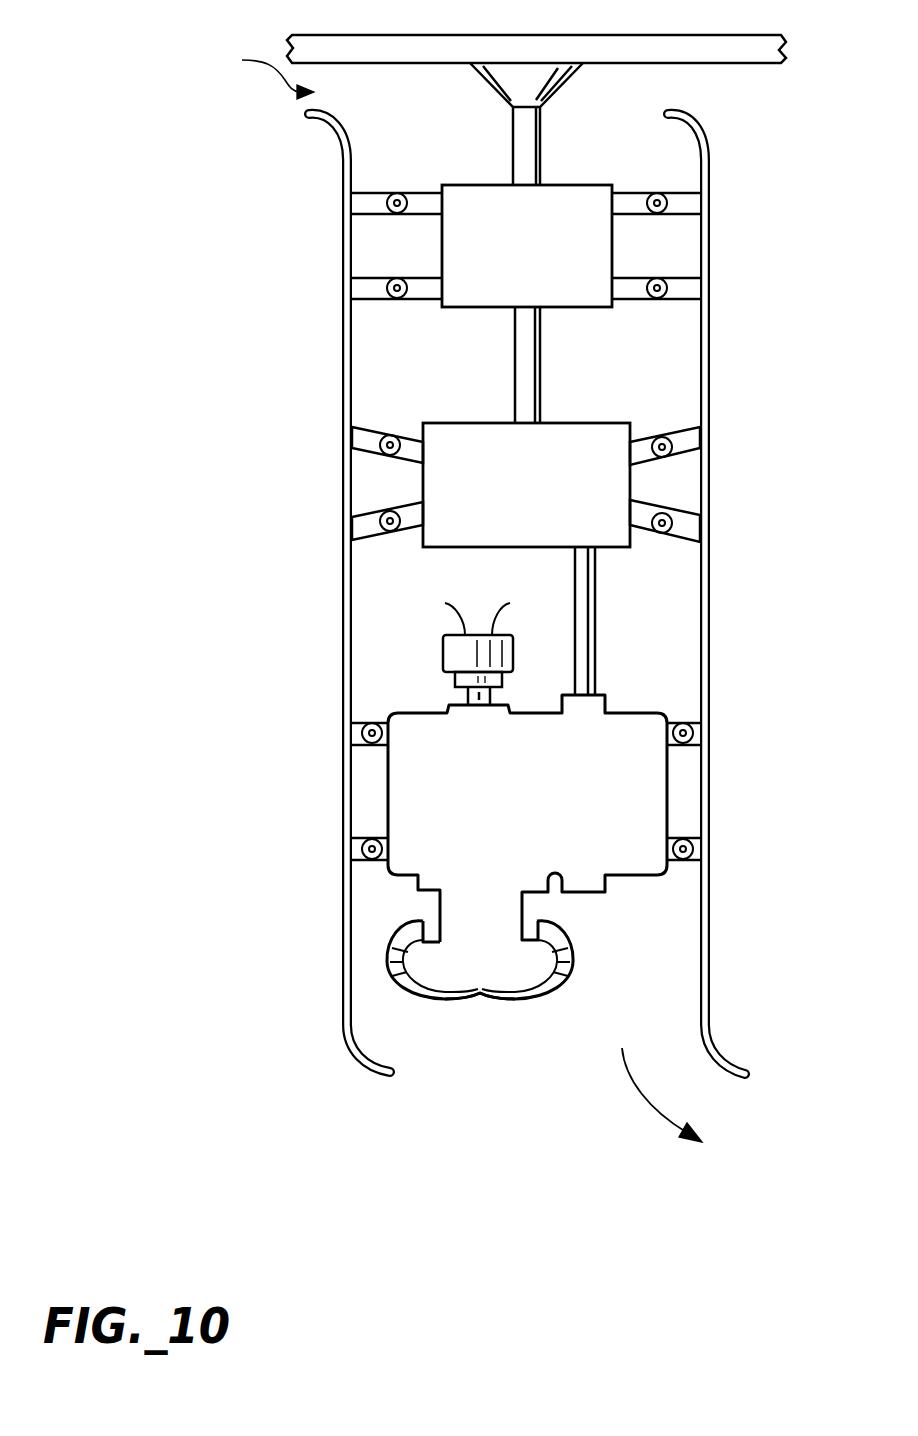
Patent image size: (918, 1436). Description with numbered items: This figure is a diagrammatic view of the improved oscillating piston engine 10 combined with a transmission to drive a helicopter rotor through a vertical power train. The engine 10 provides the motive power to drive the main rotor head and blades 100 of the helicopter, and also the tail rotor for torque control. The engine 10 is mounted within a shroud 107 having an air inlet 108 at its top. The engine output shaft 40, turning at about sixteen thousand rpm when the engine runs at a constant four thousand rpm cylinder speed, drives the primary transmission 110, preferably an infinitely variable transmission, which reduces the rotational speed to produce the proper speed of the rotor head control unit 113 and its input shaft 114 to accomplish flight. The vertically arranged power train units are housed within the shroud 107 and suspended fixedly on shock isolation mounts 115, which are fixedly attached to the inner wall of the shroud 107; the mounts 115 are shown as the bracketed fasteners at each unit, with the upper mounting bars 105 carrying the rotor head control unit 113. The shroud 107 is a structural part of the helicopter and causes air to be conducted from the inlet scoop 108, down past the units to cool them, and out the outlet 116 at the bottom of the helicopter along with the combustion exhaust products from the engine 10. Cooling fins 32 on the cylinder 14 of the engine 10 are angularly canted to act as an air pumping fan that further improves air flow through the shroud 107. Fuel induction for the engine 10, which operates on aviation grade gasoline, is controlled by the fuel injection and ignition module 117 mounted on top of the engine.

The main rotor head and blades 100 is at (702, 43).
The air inlet 108 is at (251, 72).
The shroud 107 is at (346, 415).
The mounting bars 105 is at (450, 243).
The rotor head control unit 113 is at (497, 197).
The input shaft 114 is at (518, 390).
The primary transmission 110 is at (636, 483).
The output shaft 40 is at (585, 660).
The fuel injection and ignition module 117 is at (445, 652).
The oscillating piston engine 10 is at (388, 820).
The shock isolation mounts 115 is at (390, 208).
The cylinder 14 is at (392, 955).
The cooling fins 32 is at (545, 1000).
The outlet 116 is at (633, 1107).